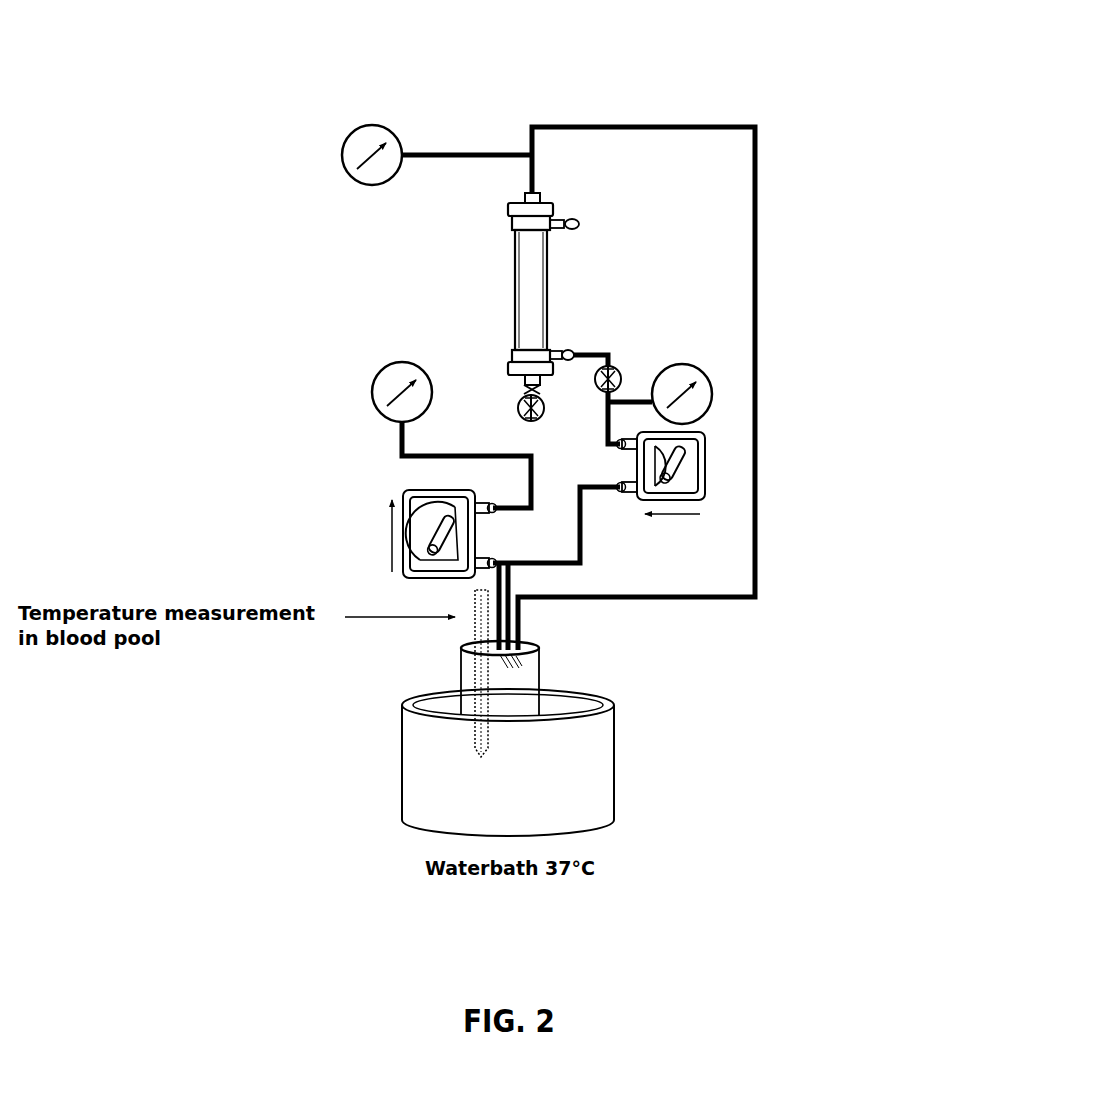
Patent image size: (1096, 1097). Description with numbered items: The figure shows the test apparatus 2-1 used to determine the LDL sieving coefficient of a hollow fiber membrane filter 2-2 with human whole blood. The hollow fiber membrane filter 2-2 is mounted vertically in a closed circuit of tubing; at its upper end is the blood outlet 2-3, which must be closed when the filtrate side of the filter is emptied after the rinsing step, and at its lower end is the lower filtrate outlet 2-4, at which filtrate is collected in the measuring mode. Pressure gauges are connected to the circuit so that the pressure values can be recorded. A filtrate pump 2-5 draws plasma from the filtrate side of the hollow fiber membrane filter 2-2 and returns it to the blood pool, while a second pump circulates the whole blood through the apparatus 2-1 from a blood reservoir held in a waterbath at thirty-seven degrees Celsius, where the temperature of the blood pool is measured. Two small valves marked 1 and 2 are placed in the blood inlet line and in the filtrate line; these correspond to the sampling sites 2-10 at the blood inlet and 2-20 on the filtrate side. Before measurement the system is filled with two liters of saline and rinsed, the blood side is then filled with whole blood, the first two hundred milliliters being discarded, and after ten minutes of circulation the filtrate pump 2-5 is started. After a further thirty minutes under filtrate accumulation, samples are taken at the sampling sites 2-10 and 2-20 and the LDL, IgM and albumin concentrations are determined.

The apparatus 2-1 is at (828, 118).
The hollow fiber membrane filter 2-2 is at (570, 272).
The blood outlet 2-3 is at (500, 194).
The lower filtrate outlet 2-4 is at (578, 327).
The filtrate pump 2-5 is at (722, 462).
The sampling valve 1 is at (523, 408).
The sampling valve 2 is at (599, 385).
The sampling site (blood inlet) 2-10 is at (715, 559).
The sampling site (filtrate) 2-20 is at (756, 563).